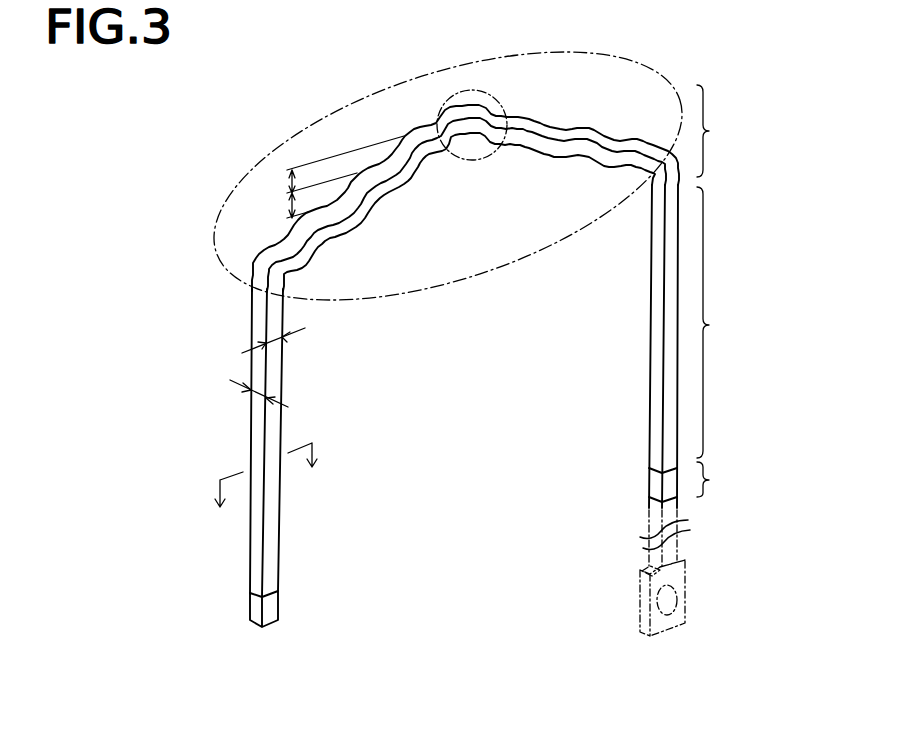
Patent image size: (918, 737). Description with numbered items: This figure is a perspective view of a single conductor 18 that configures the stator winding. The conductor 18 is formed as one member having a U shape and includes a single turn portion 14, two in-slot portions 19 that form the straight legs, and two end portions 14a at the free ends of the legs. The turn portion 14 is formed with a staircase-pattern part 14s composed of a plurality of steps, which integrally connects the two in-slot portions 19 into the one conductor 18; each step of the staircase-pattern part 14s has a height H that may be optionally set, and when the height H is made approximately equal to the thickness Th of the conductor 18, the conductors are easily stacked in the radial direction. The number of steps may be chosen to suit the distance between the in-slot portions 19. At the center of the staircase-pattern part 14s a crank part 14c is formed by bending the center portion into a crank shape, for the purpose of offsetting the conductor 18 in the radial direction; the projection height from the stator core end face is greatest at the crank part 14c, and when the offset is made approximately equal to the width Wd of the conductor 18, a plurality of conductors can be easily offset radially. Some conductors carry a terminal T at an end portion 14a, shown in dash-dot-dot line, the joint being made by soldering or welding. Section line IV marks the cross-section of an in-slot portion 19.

The turn portion 14 is at (495, 188).
The end portion 14a is at (698, 482).
The crank part 14c is at (482, 156).
The staircase-pattern part 14s is at (398, 300).
The conductor 18 is at (304, 114).
The in-slot portion 19 is at (694, 346).
The terminal T is at (638, 597).
The height H is at (336, 177).
The thickness Th is at (277, 340).
The width Wd is at (257, 400).
The section line IV is at (264, 492).